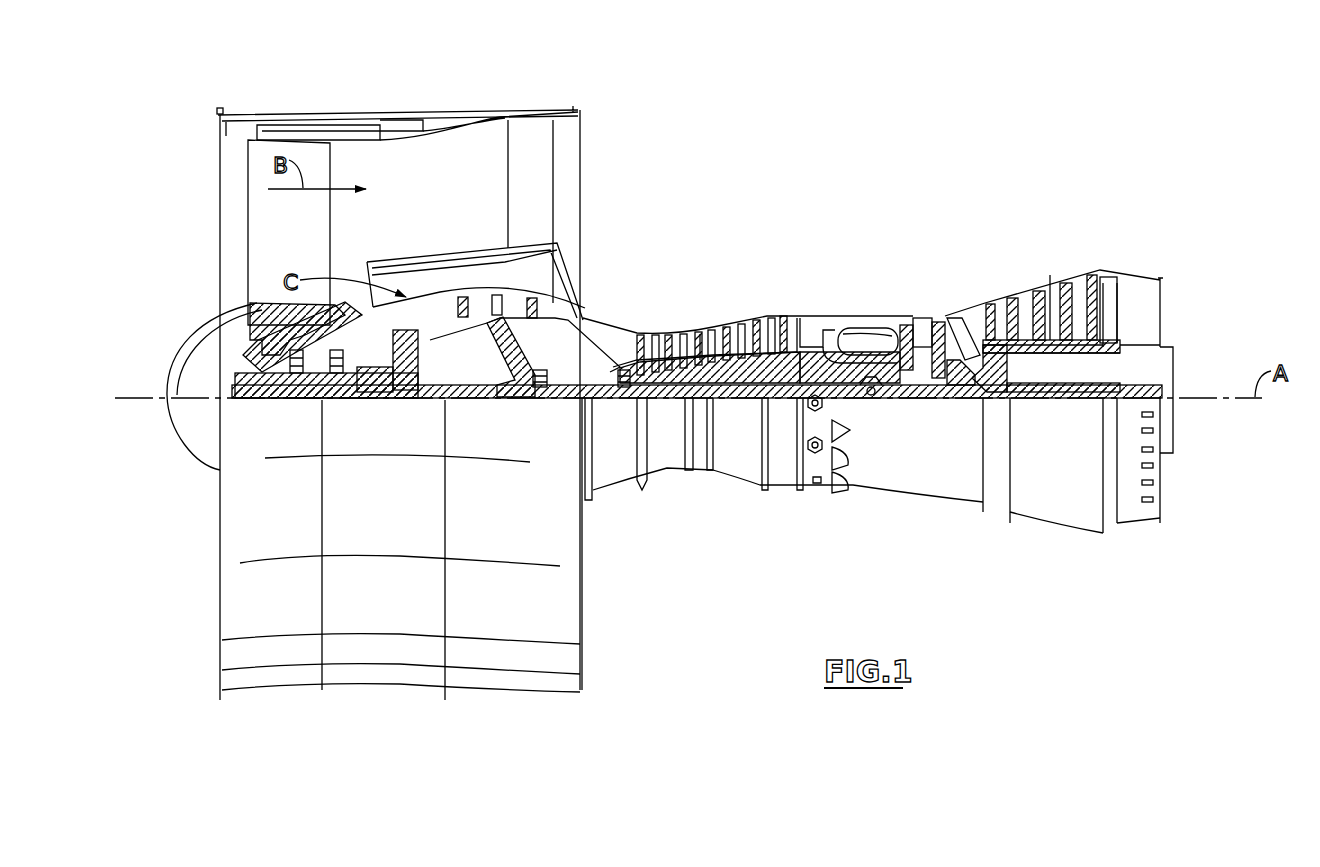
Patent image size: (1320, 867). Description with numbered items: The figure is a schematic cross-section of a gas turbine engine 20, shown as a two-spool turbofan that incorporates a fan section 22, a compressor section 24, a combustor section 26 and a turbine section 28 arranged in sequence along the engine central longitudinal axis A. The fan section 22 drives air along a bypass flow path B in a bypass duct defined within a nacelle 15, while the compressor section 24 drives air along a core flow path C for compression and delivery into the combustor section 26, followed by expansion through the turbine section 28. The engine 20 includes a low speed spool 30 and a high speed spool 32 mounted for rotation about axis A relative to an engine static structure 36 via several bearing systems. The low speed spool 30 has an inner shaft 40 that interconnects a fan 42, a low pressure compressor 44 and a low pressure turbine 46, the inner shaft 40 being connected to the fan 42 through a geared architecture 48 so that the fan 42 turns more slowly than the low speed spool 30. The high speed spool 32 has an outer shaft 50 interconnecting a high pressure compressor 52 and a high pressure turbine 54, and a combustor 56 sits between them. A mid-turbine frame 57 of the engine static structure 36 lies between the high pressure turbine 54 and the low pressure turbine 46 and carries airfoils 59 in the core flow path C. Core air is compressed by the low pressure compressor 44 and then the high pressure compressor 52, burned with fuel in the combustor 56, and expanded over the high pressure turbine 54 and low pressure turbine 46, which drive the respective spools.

The nacelle 15 is at (402, 121).
The gas turbine engine 20 is at (861, 167).
The fan section 22 is at (333, 108).
The compressor section 24 is at (632, 305).
The combustor section 26 is at (854, 292).
The turbine section 28 is at (1002, 256).
The low speed spool 30 is at (740, 400).
The high speed spool 32 is at (784, 330).
The engine static structure 36 is at (780, 488).
The inner shaft 40 is at (598, 400).
The fan 42 is at (306, 245).
The low pressure compressor 44 is at (503, 307).
The low pressure turbine 46 is at (1049, 273).
The geared architecture 48 is at (405, 376).
The outer shaft 50 is at (863, 395).
The high pressure compressor 52 is at (708, 333).
The high pressure turbine 54 is at (921, 318).
The combustor 56 is at (860, 340).
The mid-turbine frame 57 is at (964, 310).
The airfoils 59 is at (1000, 363).